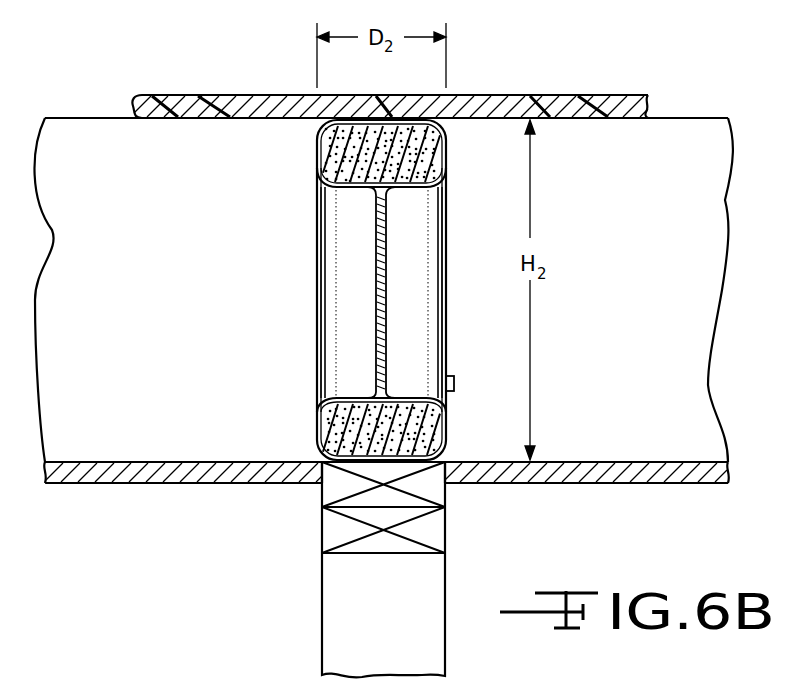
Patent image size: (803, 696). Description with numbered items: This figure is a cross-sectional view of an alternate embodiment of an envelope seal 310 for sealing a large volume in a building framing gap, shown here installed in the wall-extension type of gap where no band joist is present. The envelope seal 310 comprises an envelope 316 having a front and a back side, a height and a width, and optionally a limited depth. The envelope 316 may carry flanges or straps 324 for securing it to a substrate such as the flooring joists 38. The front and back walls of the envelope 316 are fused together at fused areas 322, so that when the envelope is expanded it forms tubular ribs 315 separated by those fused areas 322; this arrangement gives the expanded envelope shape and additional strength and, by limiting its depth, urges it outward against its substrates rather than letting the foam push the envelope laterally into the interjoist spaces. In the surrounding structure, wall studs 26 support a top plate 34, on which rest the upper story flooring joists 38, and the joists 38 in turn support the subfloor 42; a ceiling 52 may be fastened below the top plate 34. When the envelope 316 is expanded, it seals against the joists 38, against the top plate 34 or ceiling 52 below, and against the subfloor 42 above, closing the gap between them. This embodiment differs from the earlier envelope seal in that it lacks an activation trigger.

The wall studs 26 is at (397, 622).
The top plate 34 is at (332, 488).
The flooring joists 38 is at (647, 280).
The subfloor 42 is at (565, 107).
The ceiling 52 is at (107, 475).
The envelope seal 310 is at (312, 368).
The tubular ribs 315 is at (322, 218).
The envelope 316 is at (293, 348).
The fused areas 322 is at (375, 288).
The flanges or straps 324 is at (455, 383).